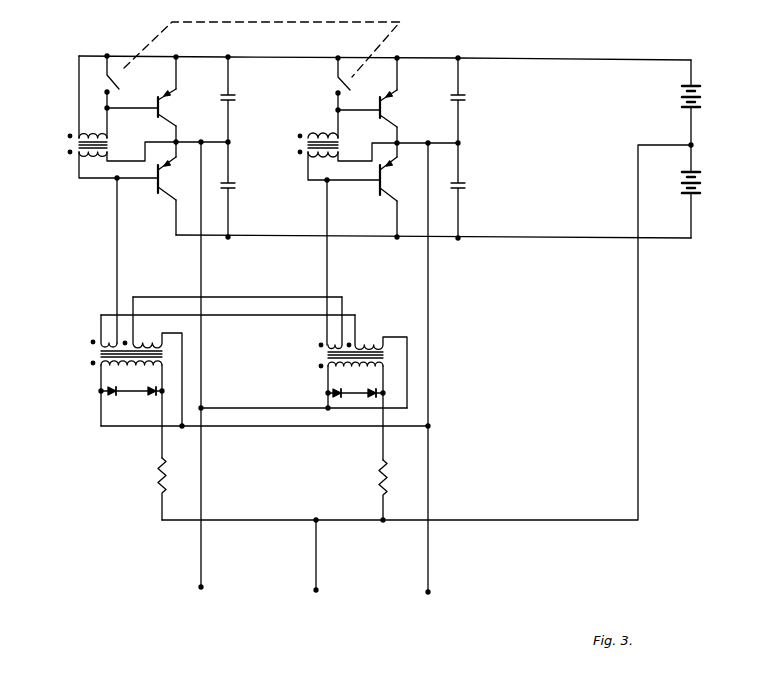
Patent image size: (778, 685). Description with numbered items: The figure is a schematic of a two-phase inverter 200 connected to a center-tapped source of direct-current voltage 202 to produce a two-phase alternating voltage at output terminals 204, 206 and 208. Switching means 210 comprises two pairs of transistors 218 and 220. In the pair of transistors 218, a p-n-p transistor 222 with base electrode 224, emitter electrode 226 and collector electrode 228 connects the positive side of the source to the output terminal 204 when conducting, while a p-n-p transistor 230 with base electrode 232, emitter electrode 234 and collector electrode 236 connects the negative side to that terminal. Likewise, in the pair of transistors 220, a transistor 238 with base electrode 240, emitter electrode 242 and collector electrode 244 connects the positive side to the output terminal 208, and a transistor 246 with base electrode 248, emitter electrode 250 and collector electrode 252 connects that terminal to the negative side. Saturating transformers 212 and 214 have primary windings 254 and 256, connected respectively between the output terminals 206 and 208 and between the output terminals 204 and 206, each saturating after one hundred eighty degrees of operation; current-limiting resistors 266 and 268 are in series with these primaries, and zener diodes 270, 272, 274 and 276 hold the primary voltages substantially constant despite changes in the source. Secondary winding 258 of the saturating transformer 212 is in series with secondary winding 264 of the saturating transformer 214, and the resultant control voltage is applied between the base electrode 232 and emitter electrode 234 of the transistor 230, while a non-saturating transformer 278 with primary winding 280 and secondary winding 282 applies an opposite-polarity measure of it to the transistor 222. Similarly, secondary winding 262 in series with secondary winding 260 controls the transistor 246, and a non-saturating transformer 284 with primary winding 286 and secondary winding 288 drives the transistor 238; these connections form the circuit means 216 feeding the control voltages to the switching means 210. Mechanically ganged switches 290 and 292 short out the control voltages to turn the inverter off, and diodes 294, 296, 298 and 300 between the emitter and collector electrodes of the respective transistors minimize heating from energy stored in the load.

The two-phase inverter 200 is at (531, 388).
The source of direct-current voltage 202 is at (696, 112).
The output terminal 204 is at (199, 590).
The output terminal 206 is at (315, 593).
The output terminal 208 is at (427, 595).
The switching means 210 is at (358, 139).
The saturating transformer 212 is at (99, 353).
The saturating transformer 214 is at (320, 356).
The circuit means 216 is at (200, 266).
The pair of transistors 218 is at (185, 98).
The pair of transistors 220 is at (407, 99).
The transistor 222 is at (157, 98).
The base electrode 224 is at (161, 107).
The emitter electrode 226 is at (171, 94).
The collector electrode 228 is at (171, 121).
The transistor 230 is at (164, 188).
The base electrode 232 is at (160, 178).
The emitter electrode 234 is at (166, 165).
The collector electrode 236 is at (150, 195).
The transistor 238 is at (379, 100).
The base electrode 240 is at (383, 108).
The emitter electrode 242 is at (388, 97).
The collector electrode 244 is at (392, 123).
The transistor 246 is at (385, 191).
The base electrode 248 is at (383, 180).
The emitter electrode 250 is at (389, 165).
The collector electrode 252 is at (367, 199).
The primary winding 254 is at (100, 369).
The primary winding 256 is at (329, 369).
The secondary winding 258 is at (103, 340).
The secondary winding 260 is at (156, 335).
The secondary winding 262 is at (329, 341).
The secondary winding 264 is at (368, 342).
The current-limiting resistor 266 is at (158, 476).
The current-limiting resistor 268 is at (380, 476).
The zener diode 270 is at (110, 394).
The zener diode 272 is at (154, 395).
The zener diode 274 is at (328, 395).
The zener diode 276 is at (376, 393).
The non-saturating transformer 278 is at (77, 143).
The primary winding 280 is at (89, 157).
The secondary winding 282 is at (101, 134).
The non-saturating transformer 284 is at (304, 145).
The primary winding 286 is at (318, 161).
The secondary winding 288 is at (330, 135).
The switch 290 is at (119, 84).
The switch 292 is at (351, 83).
The diode 294 is at (235, 97).
The diode 296 is at (235, 186).
The diode 298 is at (465, 98).
The diode 300 is at (466, 185).